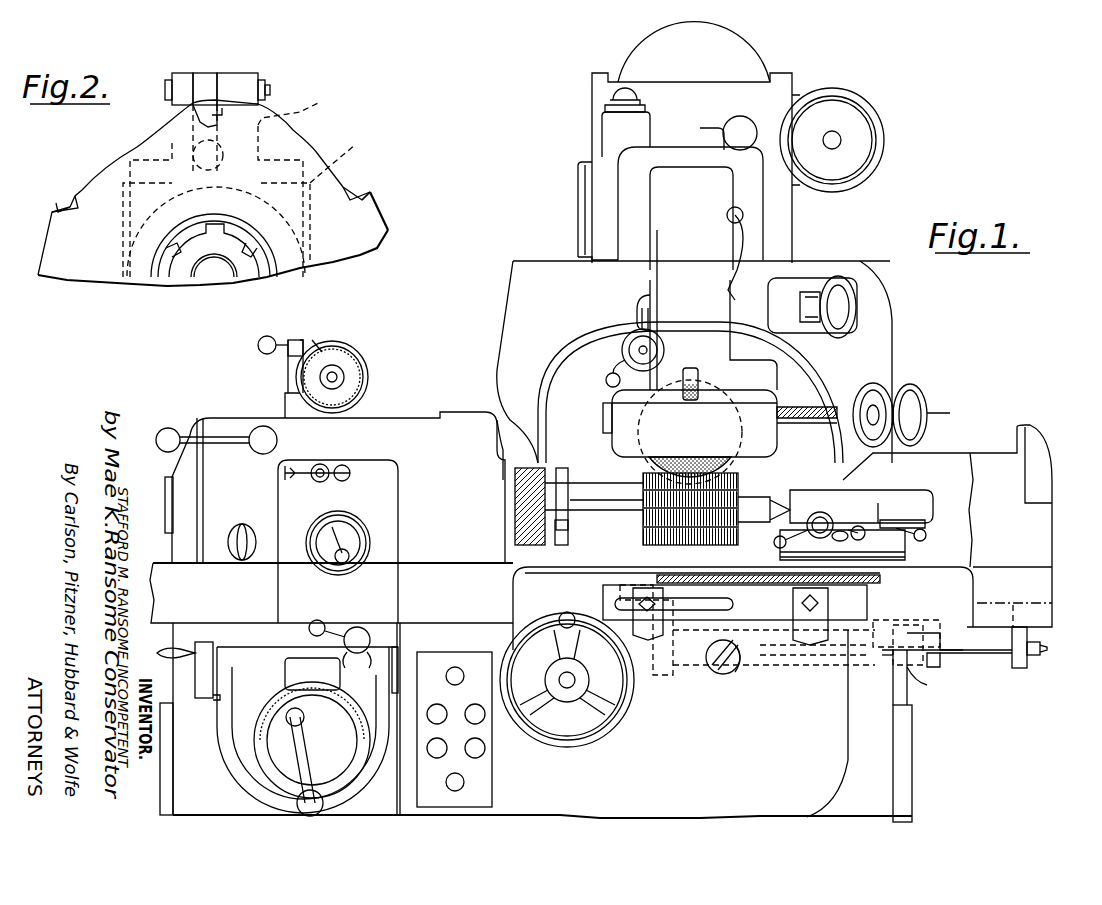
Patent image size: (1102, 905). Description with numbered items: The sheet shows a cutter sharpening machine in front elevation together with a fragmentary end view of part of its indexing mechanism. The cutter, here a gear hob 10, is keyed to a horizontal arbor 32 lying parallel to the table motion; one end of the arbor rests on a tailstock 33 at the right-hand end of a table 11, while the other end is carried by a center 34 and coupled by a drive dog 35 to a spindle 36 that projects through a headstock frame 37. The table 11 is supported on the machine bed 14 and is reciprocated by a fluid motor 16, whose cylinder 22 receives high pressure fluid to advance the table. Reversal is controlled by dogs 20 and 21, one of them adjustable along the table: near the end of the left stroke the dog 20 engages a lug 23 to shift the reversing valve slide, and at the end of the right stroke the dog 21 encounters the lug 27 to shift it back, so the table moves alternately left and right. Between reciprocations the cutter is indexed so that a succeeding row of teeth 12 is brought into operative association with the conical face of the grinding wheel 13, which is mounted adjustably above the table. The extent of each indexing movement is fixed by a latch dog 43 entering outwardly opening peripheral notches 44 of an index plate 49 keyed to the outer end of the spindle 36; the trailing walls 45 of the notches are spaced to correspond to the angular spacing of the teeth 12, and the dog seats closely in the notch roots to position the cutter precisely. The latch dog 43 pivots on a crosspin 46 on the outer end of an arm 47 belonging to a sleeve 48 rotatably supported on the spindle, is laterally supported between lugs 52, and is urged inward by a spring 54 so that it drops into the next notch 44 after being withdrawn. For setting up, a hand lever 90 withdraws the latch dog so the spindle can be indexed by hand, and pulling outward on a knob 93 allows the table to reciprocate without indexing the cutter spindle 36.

In FIG. 1, the gear hob 10 is at (686, 554).
In FIG. 1, the table 11 is at (1037, 590).
In FIG. 1, the teeth 12 is at (652, 517).
In FIG. 1, the grinding wheel 13 is at (680, 440).
In FIG. 1, the machine bed 14 is at (880, 732).
In FIG. 1, the fluid motor 16 is at (770, 675).
In FIG. 1, the dog 20 is at (790, 612).
In FIG. 1, the dog 21 is at (658, 680).
In FIG. 1, the cylinder 22 is at (815, 665).
In FIG. 1, the lug 23 is at (710, 650).
In FIG. 1, the lug 27 is at (740, 670).
In FIG. 1, the arbor 32 is at (595, 520).
In FIG. 1, the tailstock 33 is at (850, 515).
In FIG. 1, the center 34 is at (548, 520).
In FIG. 1, the drive dog 35 is at (565, 485).
In FIG. 1, the headstock frame 37 is at (468, 385).
In FIG. 1, the hand lever 90 is at (220, 440).
In FIG. 1, the knob 93 is at (242, 524).
In FIG. 2, the spindle 36 is at (207, 268).
In FIG. 2, the latch dog 43 is at (205, 82).
In FIG. 2, the notches 44 is at (62, 203).
In FIG. 2, the trailing walls 45 is at (60, 200).
In FIG. 2, the crosspin 46 is at (268, 90).
In FIG. 2, the arm 47 is at (295, 109).
In FIG. 2, the sleeve 48 is at (340, 153).
In FIG. 2, the index plate 49 is at (377, 232).
In FIG. 2, the lugs 52 is at (186, 75).
In FIG. 2, the spring 54 is at (178, 158).